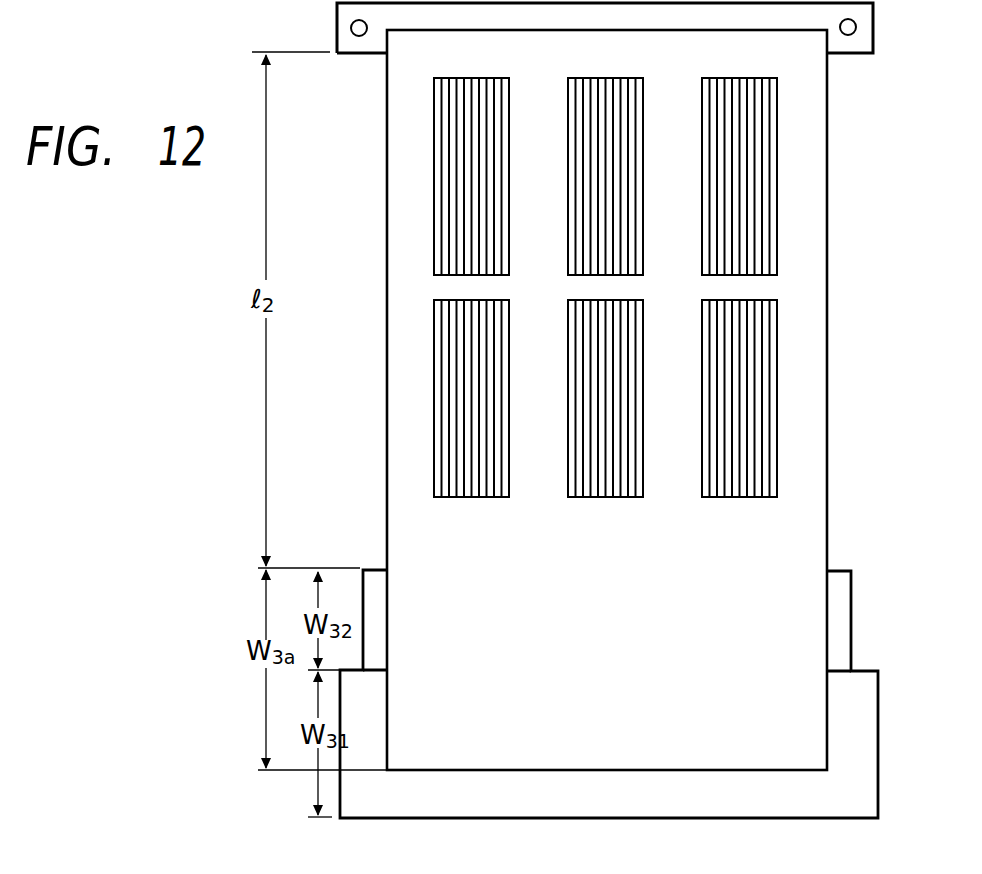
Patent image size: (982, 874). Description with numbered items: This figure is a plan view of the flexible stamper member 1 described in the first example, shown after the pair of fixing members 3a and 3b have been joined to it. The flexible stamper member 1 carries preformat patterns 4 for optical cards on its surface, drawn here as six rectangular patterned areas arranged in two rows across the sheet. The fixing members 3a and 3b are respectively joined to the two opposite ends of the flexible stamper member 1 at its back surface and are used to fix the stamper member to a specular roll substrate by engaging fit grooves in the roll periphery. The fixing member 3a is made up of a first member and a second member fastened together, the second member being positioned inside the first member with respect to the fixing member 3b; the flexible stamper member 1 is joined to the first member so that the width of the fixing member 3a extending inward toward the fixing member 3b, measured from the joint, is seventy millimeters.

The flexible stamper member 1 is at (793, 320).
The preformat patterns 4 is at (783, 212).
The fixing member 3a is at (888, 683).
The fixing member 3b is at (860, 38).